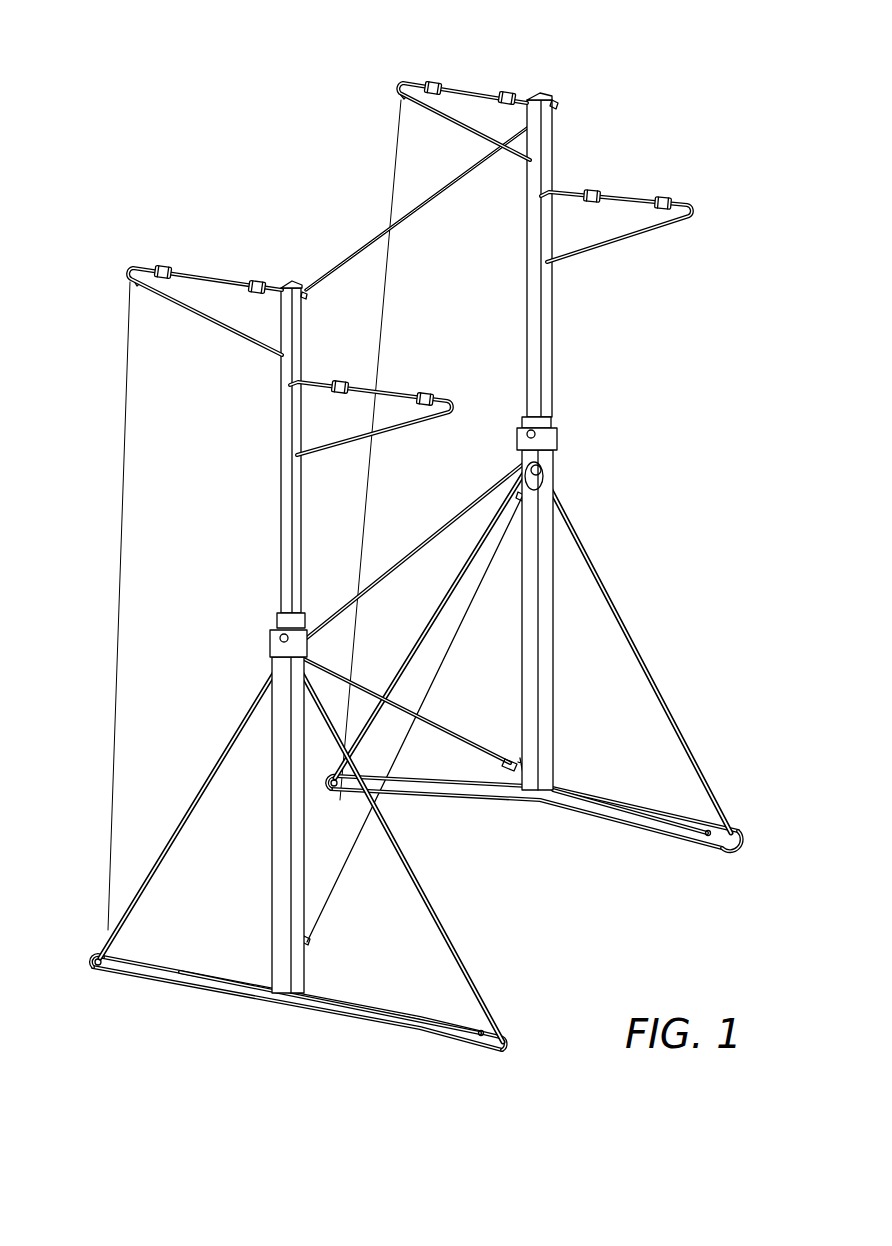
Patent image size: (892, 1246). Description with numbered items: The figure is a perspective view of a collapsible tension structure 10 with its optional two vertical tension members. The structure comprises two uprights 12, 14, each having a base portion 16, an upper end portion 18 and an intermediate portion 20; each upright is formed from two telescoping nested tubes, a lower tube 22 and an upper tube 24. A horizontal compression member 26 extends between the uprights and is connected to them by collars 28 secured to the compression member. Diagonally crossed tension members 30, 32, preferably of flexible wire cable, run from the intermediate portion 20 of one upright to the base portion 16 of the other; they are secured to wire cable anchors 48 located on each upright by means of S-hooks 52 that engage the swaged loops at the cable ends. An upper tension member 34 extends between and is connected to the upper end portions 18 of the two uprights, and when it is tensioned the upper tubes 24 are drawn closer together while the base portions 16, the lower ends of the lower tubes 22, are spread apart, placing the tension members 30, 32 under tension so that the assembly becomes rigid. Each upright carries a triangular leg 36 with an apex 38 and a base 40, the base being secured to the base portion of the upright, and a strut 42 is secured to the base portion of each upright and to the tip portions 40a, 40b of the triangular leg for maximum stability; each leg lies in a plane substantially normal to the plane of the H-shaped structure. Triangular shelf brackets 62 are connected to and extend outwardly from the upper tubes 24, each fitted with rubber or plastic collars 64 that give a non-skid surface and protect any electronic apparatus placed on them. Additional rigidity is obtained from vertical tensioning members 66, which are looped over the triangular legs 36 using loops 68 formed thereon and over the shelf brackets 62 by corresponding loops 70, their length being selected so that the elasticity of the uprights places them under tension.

The collapsible tension structure 10 is at (514, 876).
The upright 12 is at (222, 533).
The upright 14 is at (621, 441).
The base portion 16 is at (401, 910).
The upper end portion 18 is at (410, 239).
The intermediate portion 20 is at (582, 441).
The lower tube 22 is at (545, 710).
The upper tube 24 is at (555, 365).
The horizontal compression member 26 is at (410, 545).
The collar 28 is at (557, 437).
The tension member 30 is at (455, 733).
The tension member 32 is at (462, 608).
The upper tension member 34 is at (461, 185).
The triangular leg 36 is at (705, 784).
The apex 38 is at (545, 467).
The base 40 is at (606, 815).
The tip portion 40a is at (502, 1052).
The tip portion 40b is at (113, 972).
The strut 42 is at (238, 995).
The wire cable anchor 48 is at (528, 798).
The S-hook 52 is at (544, 485).
The triangular shelf bracket 62 is at (476, 80).
The collar 64 is at (434, 82).
The vertical tensioning member 66 is at (115, 660).
The loop 68 is at (333, 787).
The loop 70 is at (137, 286).